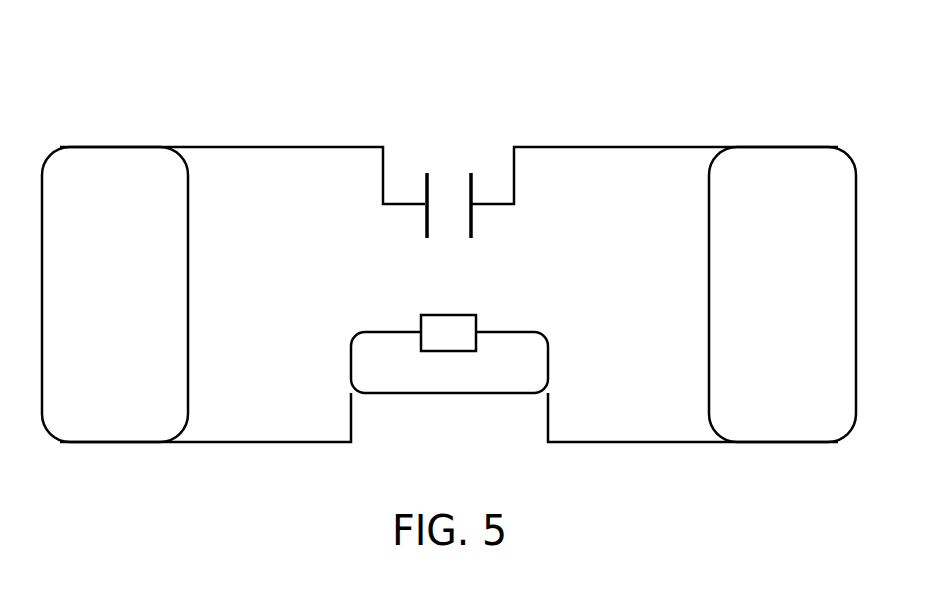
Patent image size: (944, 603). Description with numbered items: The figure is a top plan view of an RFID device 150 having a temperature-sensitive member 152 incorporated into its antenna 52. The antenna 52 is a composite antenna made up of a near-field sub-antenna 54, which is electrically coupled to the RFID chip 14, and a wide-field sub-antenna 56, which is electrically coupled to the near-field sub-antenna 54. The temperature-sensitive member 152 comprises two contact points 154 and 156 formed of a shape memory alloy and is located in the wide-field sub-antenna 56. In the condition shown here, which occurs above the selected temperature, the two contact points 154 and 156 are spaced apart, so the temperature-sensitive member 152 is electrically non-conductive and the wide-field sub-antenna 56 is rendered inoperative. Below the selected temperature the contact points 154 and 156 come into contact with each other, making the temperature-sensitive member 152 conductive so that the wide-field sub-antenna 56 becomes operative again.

The RFID device 150 is at (447, 225).
The antenna 52 is at (156, 241).
The wide-field sub-antenna 56 is at (620, 147).
The temperature-sensitive member 152 is at (469, 129).
The contact point 154 is at (400, 206).
The contact point 156 is at (498, 206).
The near-field sub-antenna 54 is at (447, 395).
The RFID chip 14 is at (447, 313).